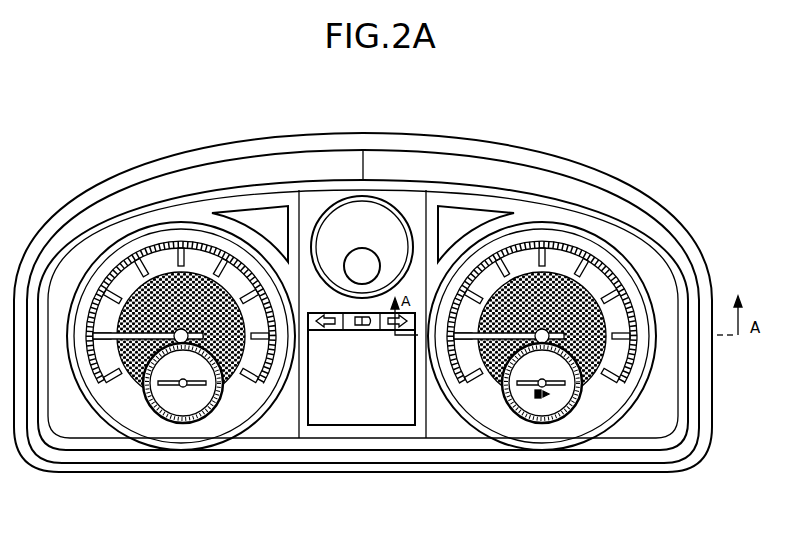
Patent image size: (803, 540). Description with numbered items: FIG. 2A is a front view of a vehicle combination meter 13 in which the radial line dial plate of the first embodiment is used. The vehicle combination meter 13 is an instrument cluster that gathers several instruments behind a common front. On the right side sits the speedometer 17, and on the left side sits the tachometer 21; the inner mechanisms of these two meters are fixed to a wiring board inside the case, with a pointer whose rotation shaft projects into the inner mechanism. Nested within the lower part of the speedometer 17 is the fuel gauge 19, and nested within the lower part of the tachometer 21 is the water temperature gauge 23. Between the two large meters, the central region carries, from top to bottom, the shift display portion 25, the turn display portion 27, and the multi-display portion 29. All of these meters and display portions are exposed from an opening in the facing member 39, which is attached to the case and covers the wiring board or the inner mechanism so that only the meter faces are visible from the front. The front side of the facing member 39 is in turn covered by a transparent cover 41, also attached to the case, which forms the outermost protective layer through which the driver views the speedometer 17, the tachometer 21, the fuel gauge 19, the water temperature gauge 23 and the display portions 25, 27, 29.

The vehicle combination meter 13 is at (201, 143).
The speedometer 17 is at (580, 293).
The fuel gauge 19 is at (553, 400).
The tachometer 21 is at (142, 293).
The water temperature gauge 23 is at (168, 403).
The shift display portion 25 is at (387, 230).
The turn display portion 27 is at (330, 331).
The multi-display portion 29 is at (390, 426).
The facing member 39 is at (553, 183).
The transparent cover 41 is at (697, 313).